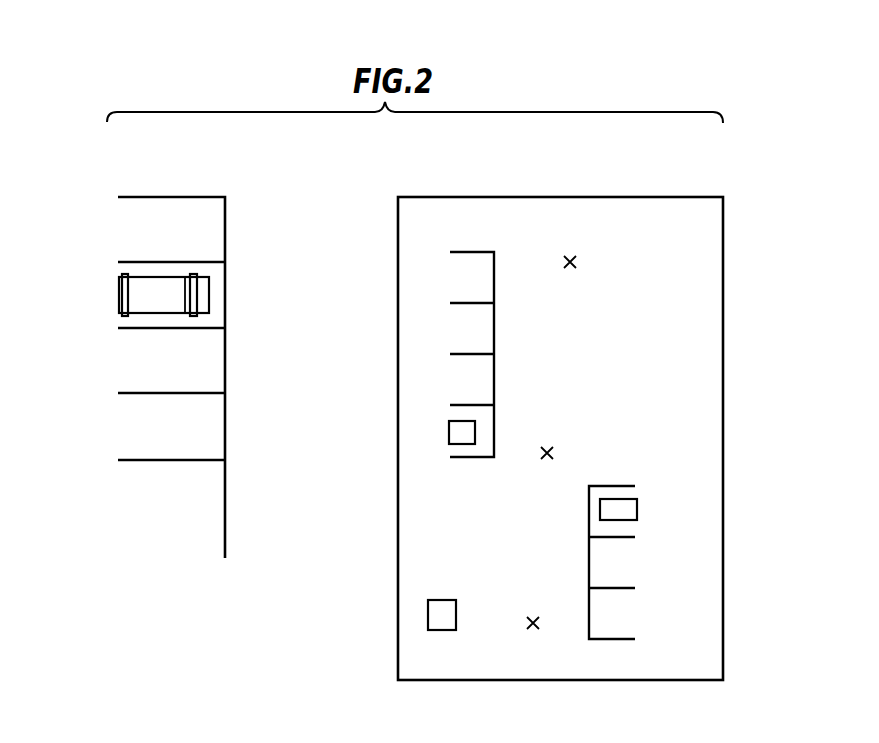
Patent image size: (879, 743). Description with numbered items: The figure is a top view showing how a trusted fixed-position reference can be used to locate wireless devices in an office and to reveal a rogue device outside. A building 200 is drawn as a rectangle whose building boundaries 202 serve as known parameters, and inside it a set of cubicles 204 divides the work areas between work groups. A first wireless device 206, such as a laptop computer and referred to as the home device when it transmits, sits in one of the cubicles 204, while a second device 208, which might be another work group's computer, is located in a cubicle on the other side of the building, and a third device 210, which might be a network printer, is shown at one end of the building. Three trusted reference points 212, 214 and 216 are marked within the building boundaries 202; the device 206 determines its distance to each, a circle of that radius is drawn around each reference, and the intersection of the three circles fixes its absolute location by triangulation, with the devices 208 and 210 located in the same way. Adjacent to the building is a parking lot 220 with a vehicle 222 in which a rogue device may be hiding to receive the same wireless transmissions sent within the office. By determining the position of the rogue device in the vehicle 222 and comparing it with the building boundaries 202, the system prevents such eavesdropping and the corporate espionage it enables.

The building 200 is at (110, 600).
The building boundaries 202 is at (398, 222).
The set of cubicles 204 is at (461, 251).
The first wireless device 206 is at (449, 431).
The second device 208 is at (637, 507).
The third device 210 is at (428, 614).
The reference point 212 is at (571, 255).
The reference point 214 is at (553, 447).
The reference point 216 is at (534, 616).
The parking lot / loading area 220 is at (150, 197).
The vehicle 222 is at (118, 295).